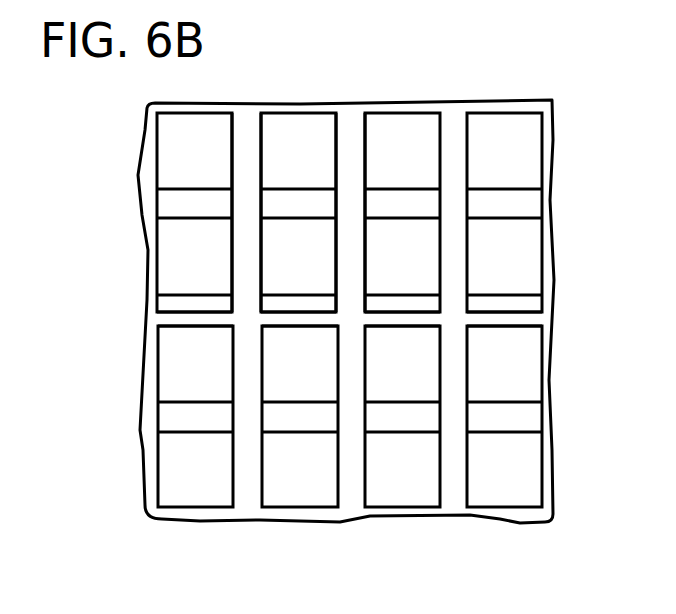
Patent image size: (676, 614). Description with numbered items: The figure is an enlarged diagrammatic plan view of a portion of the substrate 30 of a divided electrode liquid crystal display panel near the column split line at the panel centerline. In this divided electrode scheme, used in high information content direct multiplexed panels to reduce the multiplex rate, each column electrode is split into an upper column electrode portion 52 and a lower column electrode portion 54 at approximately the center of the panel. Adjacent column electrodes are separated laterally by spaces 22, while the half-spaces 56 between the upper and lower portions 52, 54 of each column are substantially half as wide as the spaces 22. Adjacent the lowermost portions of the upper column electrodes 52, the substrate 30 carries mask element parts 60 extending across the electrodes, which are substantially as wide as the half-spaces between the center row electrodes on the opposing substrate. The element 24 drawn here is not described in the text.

The substrate 30 is at (140, 527).
The upper column electrode portion 52 is at (193, 128).
The space between column electrodes 22 is at (247, 128).
The mask element part 60 is at (497, 296).
The middle cell strip 24 is at (518, 415).
The half-space 56 is at (160, 318).
The lower column electrode portion 54 is at (500, 508).